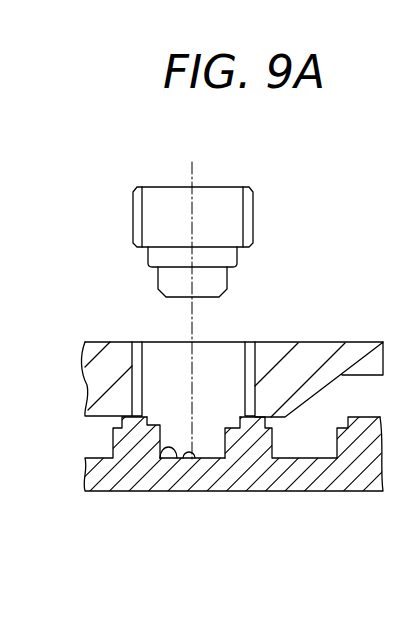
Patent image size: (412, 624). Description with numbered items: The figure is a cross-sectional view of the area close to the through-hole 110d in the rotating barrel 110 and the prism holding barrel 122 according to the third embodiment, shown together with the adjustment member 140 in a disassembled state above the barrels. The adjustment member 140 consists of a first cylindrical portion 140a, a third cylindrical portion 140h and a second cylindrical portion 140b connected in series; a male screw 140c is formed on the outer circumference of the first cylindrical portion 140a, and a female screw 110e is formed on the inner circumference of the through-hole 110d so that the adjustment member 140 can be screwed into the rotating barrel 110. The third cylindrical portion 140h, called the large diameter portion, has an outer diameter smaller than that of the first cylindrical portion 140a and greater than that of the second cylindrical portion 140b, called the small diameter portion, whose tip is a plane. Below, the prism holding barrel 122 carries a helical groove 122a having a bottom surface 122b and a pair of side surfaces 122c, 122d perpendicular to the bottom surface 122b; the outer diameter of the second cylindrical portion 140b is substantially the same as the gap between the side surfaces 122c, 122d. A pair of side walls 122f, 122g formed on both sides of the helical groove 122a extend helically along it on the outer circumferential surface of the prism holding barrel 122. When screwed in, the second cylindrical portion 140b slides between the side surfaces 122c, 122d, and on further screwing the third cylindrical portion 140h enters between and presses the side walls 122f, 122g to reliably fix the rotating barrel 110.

The rotating barrel 110 is at (85, 341).
The through-hole 110d is at (254, 342).
The female screw 110e is at (142, 382).
The prism holding barrel 122 is at (86, 492).
The helical groove 122a is at (306, 451).
The bottom surface 122b is at (190, 460).
The side surface 122c is at (147, 419).
The side surface 122d is at (228, 431).
The side wall 122f is at (147, 427).
The side wall 122g is at (228, 421).
The adjustment member 140 is at (161, 187).
The first cylindrical portion 140a is at (212, 198).
The second cylindrical portion 140b is at (207, 280).
The male screw 140c is at (249, 205).
The third cylindrical portion 140h is at (228, 258).